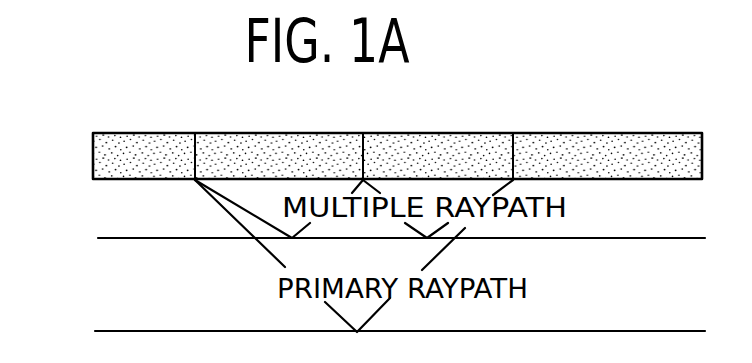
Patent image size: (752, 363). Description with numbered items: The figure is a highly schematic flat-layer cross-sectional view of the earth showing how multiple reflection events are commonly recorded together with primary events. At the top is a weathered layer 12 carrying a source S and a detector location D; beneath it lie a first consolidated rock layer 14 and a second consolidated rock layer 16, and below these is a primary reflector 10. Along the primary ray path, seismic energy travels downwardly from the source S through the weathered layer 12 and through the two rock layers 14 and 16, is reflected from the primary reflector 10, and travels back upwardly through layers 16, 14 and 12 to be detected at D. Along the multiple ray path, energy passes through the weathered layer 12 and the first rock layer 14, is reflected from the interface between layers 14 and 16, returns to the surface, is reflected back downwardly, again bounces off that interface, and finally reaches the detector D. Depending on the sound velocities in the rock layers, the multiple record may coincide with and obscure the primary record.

The primary reflector 10 is at (172, 328).
The weathered layer 12 is at (92, 160).
The first consolidated rock layer 14 is at (137, 220).
The second consolidated rock layer 16 is at (137, 300).